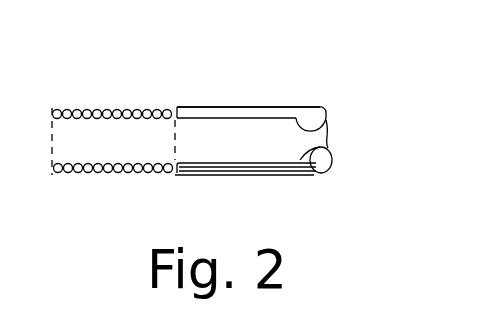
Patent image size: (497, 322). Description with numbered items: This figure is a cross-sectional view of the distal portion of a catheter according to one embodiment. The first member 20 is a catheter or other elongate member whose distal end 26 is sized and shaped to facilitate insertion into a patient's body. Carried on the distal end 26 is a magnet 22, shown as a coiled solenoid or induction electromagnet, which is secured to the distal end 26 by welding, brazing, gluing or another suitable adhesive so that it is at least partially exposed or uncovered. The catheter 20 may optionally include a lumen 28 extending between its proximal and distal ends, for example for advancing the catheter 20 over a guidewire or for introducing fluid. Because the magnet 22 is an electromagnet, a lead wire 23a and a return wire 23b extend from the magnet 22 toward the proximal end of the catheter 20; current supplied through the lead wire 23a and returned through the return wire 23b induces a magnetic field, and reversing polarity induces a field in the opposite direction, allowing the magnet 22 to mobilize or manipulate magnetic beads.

The first member 20 is at (305, 106).
The magnet 22 is at (99, 110).
The distal end 26 is at (207, 106).
The lumen 28 is at (322, 124).
The lead wire 23a is at (332, 147).
The return wire 23b is at (290, 175).